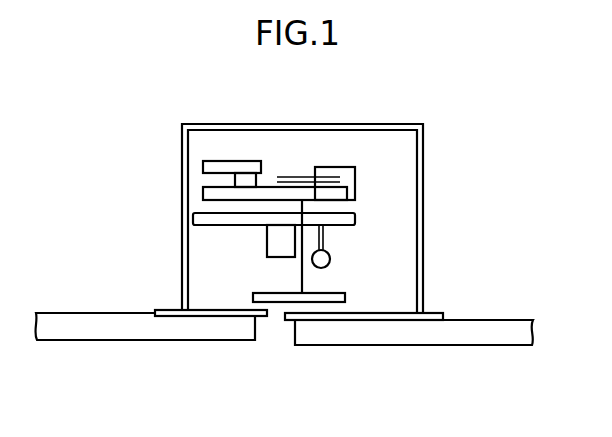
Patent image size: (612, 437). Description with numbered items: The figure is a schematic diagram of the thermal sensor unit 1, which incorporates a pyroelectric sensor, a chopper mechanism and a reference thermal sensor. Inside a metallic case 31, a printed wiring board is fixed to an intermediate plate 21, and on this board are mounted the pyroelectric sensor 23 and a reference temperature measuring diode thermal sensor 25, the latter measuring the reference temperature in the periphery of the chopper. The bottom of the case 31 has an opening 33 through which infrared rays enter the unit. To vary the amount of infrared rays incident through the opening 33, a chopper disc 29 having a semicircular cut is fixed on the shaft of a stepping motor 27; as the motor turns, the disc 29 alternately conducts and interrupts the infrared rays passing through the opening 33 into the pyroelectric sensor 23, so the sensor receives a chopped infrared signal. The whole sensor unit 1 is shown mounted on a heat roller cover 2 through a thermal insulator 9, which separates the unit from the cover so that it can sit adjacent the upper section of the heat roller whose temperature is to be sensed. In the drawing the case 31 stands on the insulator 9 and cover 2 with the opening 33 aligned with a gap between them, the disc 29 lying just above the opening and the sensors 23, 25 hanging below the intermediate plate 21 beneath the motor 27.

The sensor unit 1 is at (427, 153).
The heat roller cover 2 is at (463, 335).
The thermal insulator 9 is at (397, 322).
The intermediate plate 21 is at (356, 221).
The pyroelectric sensor 23 is at (267, 245).
The reference temperature measuring diode thermal sensor 25 is at (330, 258).
The stepping motor 27 is at (297, 173).
The chopper disc 29 is at (345, 298).
The metallic case 31 is at (182, 163).
The opening 33 is at (276, 312).